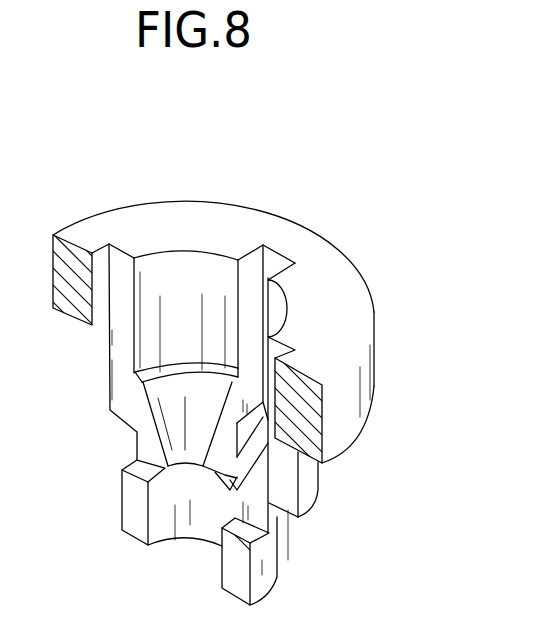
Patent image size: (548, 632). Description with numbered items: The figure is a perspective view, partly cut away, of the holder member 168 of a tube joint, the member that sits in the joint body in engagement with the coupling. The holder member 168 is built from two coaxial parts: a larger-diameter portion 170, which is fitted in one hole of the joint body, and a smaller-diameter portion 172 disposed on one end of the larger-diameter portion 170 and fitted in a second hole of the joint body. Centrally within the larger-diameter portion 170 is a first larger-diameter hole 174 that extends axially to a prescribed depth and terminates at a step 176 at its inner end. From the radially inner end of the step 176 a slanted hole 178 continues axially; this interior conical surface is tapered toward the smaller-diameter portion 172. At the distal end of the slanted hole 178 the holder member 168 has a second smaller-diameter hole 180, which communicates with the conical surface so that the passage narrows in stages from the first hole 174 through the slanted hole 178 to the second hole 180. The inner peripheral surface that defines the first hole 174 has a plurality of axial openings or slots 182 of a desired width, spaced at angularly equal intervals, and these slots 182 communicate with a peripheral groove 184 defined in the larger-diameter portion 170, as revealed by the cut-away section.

The holder member 168 is at (214, 187).
The larger-diameter portion 170 is at (348, 394).
The smaller-diameter portion 172 is at (262, 572).
The first larger-diameter hole 174 is at (172, 265).
The step 176 is at (135, 373).
The slanted hole 178 is at (172, 418).
The second smaller-diameter hole 180 is at (190, 519).
The axial openings or slots 182 is at (272, 263).
The peripheral groove 184 is at (128, 446).